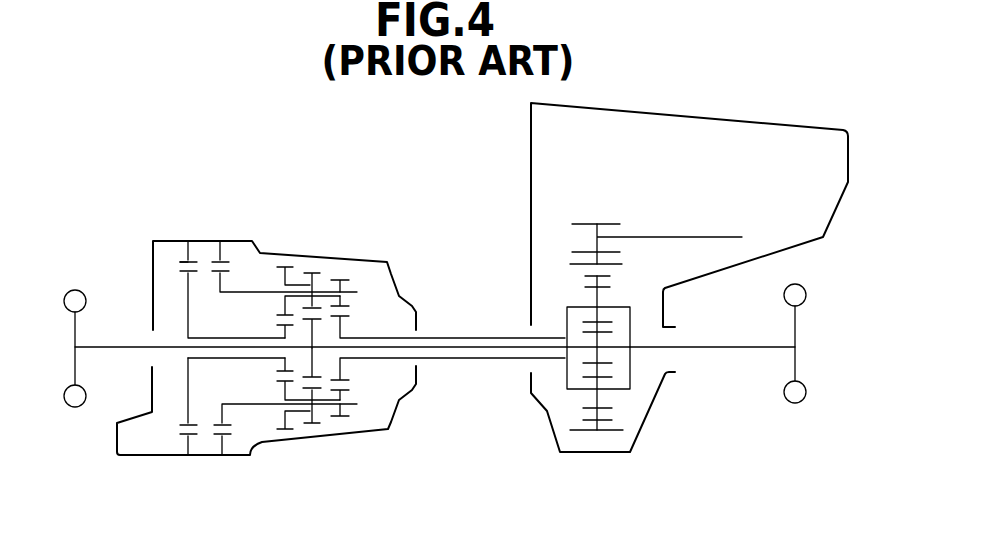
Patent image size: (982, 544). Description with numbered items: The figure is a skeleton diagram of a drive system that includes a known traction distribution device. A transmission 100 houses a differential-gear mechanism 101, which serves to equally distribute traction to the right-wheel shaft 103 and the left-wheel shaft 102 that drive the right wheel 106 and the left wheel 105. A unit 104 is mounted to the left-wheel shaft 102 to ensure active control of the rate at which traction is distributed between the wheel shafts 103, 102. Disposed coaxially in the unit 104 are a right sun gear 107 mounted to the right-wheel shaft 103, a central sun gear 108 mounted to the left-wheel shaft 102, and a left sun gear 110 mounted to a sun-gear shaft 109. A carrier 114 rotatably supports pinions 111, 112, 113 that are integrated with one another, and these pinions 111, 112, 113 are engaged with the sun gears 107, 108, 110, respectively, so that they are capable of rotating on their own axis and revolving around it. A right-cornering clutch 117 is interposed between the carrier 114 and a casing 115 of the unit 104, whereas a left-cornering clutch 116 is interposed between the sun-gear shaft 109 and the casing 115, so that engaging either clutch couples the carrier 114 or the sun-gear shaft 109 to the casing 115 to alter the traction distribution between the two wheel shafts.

The transmission 100 is at (660, 187).
The differential-gear mechanism 101 is at (622, 408).
The left-wheel shaft 102 is at (114, 346).
The right-wheel shaft 103 is at (721, 349).
The unit 104 is at (389, 261).
The left wheel 105 is at (79, 290).
The right wheel 106 is at (797, 403).
The right sun gear 107 is at (348, 373).
The central sun gear 108 is at (313, 425).
The sun-gear shaft 109 is at (190, 366).
The left sun gear 110 is at (281, 364).
The pinion 111 is at (341, 280).
The pinion 112 is at (310, 272).
The pinion 113 is at (281, 266).
The carrier 114 is at (238, 400).
The casing 115 is at (190, 239).
The left-cornering clutch 116 is at (177, 263).
The right-cornering clutch 117 is at (228, 262).